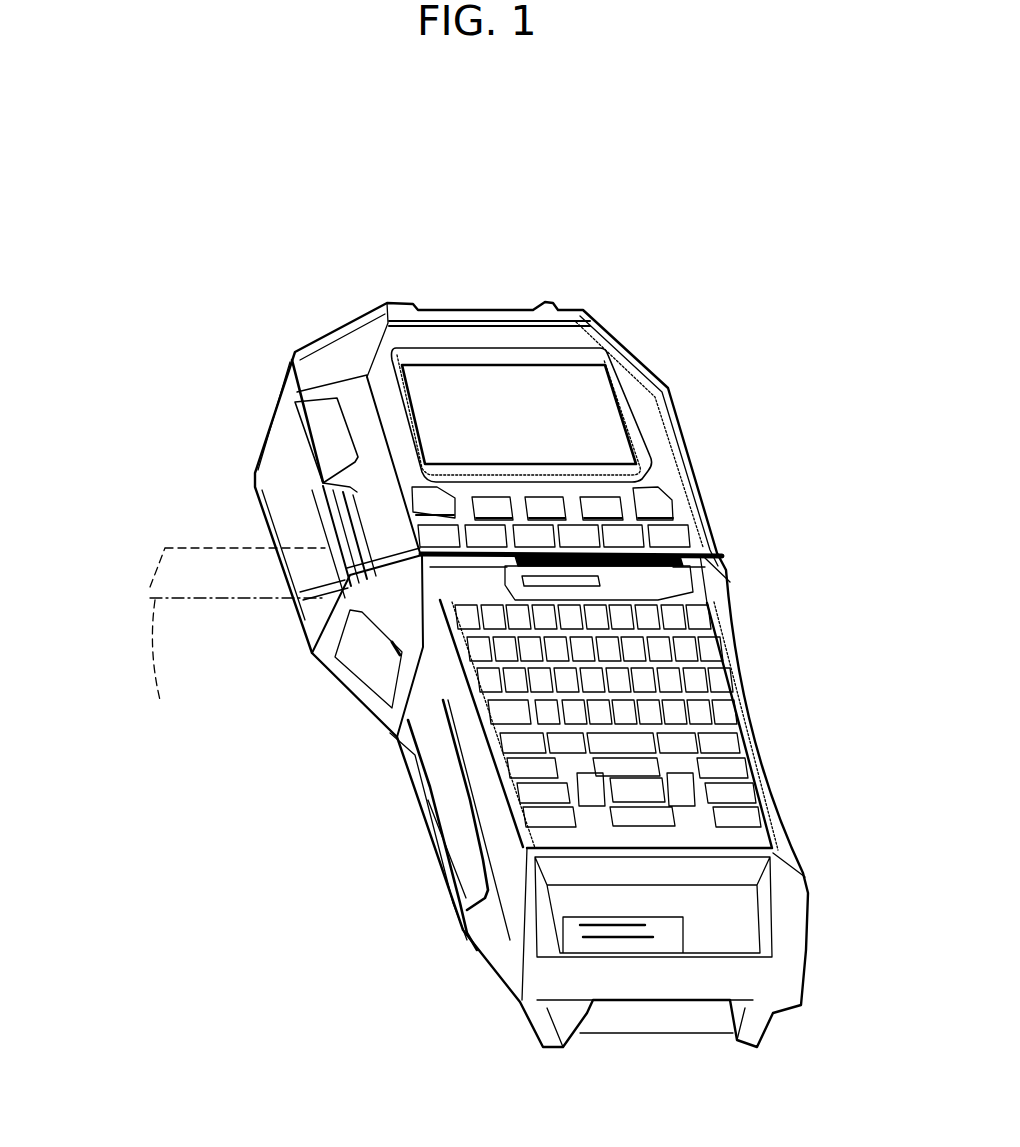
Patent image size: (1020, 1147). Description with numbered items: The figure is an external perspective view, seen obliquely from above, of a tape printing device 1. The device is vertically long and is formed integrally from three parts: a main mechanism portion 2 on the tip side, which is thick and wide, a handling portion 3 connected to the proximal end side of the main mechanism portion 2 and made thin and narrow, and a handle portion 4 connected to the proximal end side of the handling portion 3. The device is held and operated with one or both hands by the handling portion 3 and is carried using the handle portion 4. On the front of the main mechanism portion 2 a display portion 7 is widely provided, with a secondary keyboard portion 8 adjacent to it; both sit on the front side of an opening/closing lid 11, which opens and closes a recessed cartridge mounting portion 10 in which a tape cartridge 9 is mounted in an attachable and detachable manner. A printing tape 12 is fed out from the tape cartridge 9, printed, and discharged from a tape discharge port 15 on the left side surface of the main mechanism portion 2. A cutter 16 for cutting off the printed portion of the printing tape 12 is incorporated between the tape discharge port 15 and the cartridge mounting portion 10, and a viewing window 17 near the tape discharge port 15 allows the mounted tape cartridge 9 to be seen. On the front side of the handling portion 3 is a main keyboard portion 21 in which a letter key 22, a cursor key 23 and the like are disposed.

The tape printing device 1 is at (540, 168).
The main mechanism portion 2 is at (668, 312).
The handling portion 3 is at (800, 700).
The handle portion 4 is at (810, 1034).
The display portion 7 is at (590, 417).
The secondary keyboard portion 8 is at (637, 491).
The tape cartridge 9 is at (118, 568).
The cartridge mounting portion 10 is at (543, 390).
The opening/closing lid 11 is at (470, 338).
The printing tape 12 is at (160, 669).
The tape discharge port 15 is at (315, 543).
The cutter 16 is at (286, 588).
The viewing window 17 is at (328, 437).
The main keyboard portion 21 is at (298, 792).
The letter key 22 is at (480, 728).
The cursor key 23 is at (508, 810).